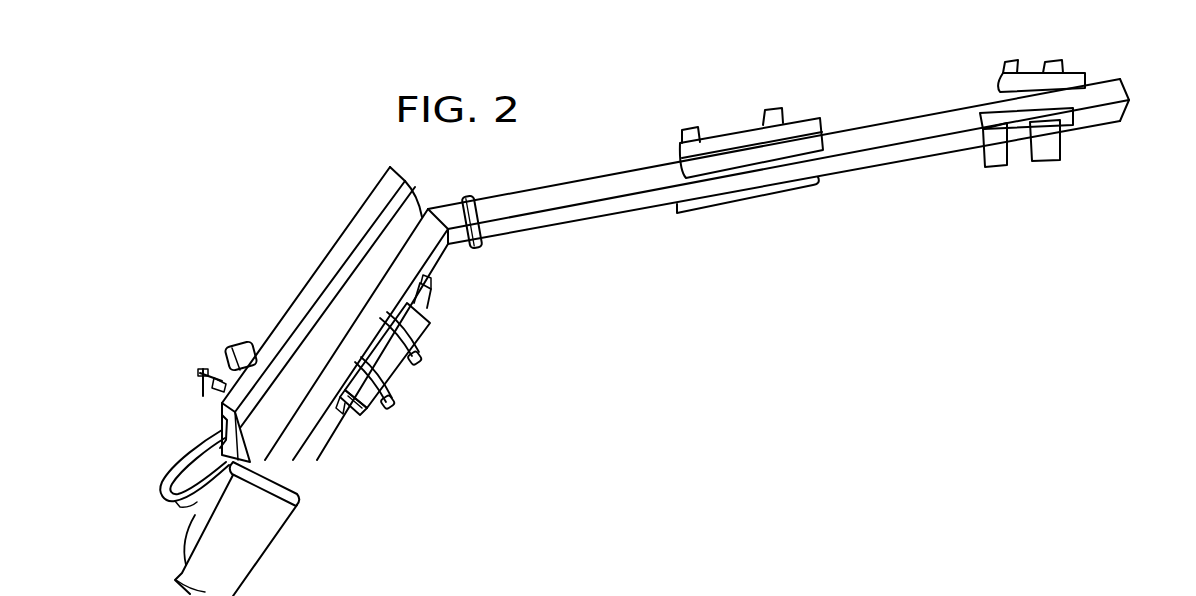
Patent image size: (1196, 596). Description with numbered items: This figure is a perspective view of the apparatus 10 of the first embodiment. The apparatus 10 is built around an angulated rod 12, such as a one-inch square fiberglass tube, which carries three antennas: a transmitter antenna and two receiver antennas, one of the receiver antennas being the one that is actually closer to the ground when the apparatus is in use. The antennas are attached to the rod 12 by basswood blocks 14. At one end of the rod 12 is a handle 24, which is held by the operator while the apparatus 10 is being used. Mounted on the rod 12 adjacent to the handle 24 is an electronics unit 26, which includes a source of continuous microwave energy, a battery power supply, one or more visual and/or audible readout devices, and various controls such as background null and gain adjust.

The apparatus 10 is at (554, 171).
The rod 12 is at (563, 213).
The basswood blocks 14 is at (740, 157).
The handle 24 is at (243, 553).
The electronics unit 26 is at (340, 233).